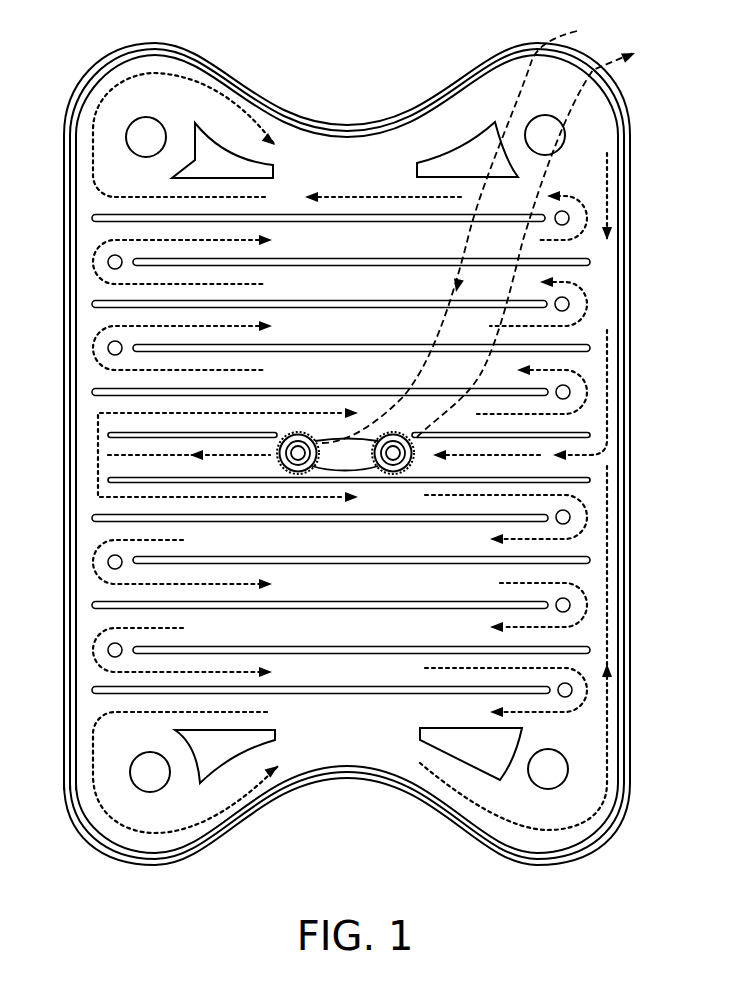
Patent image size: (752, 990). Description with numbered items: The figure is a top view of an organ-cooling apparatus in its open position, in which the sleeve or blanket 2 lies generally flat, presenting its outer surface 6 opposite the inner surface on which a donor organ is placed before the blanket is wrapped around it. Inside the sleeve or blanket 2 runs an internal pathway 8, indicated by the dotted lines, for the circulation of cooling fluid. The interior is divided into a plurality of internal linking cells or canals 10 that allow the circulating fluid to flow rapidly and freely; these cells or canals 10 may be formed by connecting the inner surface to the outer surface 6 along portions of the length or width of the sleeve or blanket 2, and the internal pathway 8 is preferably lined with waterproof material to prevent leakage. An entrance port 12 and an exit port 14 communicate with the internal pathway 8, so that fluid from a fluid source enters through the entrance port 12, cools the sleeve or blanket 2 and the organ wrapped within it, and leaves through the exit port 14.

The sleeve or blanket 2 is at (204, 872).
The outer surface 6 is at (569, 764).
The internal pathway 8 is at (100, 575).
The internal linking cells or canals 10 is at (578, 360).
The entrance port 12 is at (282, 447).
The exit port 14 is at (412, 462).